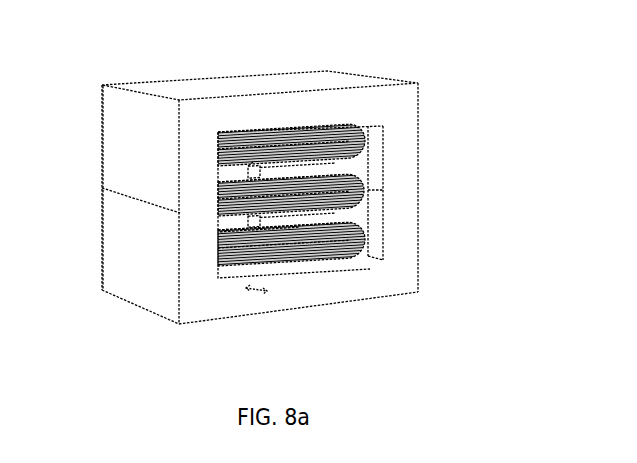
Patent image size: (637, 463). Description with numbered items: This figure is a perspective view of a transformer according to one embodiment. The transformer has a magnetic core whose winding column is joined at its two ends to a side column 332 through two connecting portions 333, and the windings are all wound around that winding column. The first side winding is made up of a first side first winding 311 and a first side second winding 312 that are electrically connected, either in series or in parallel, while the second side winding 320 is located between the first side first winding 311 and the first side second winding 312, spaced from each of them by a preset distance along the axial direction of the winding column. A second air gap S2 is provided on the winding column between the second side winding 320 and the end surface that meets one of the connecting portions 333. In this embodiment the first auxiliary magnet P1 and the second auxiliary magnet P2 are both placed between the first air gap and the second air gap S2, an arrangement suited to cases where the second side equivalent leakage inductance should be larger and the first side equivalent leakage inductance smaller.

The connecting portion 333 is at (233, 113).
The side column 332 is at (193, 163).
The first side first winding 311 is at (288, 143).
The first side second winding 312 is at (317, 247).
The second side winding 320 is at (238, 205).
The first auxiliary magnet P1 is at (312, 170).
The second auxiliary magnet P2 is at (317, 225).
The second air gap S2 is at (230, 232).